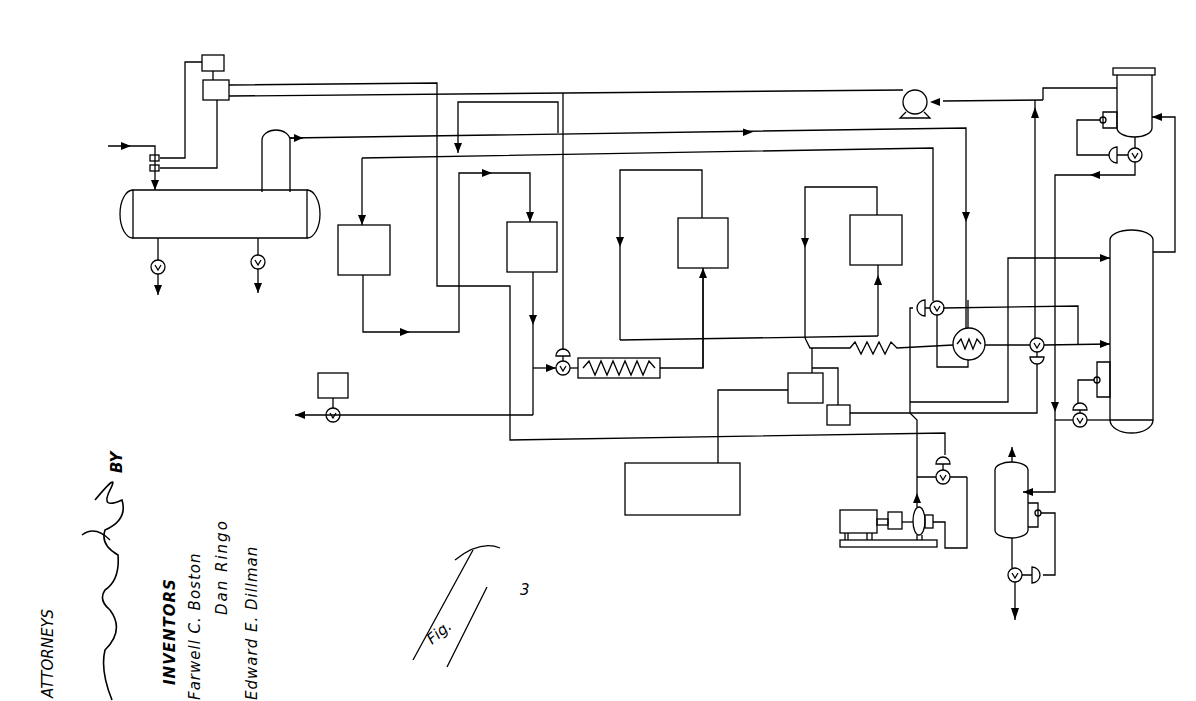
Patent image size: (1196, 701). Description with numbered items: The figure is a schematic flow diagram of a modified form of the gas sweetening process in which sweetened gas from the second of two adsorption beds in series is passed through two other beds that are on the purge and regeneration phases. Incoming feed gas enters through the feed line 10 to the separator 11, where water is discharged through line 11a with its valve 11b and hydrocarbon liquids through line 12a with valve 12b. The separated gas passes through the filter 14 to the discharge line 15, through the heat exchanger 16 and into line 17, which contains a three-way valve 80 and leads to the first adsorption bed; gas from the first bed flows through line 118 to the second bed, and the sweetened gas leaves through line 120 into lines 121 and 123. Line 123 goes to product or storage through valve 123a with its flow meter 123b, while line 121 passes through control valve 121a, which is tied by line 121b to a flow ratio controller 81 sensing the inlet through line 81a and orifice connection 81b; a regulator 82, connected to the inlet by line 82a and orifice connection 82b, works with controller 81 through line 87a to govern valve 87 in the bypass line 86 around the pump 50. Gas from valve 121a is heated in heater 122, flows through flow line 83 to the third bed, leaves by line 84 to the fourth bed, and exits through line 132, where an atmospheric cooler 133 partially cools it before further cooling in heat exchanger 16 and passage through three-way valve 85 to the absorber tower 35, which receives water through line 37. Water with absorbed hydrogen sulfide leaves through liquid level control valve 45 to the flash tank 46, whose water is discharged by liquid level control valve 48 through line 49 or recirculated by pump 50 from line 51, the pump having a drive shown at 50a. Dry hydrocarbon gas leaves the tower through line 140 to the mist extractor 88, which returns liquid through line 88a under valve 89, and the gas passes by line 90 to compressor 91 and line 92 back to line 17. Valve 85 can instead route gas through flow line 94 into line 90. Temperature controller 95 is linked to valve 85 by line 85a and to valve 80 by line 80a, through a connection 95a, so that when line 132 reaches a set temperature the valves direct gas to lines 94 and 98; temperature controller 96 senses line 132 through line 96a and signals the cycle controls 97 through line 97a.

The feed line 10 is at (133, 147).
The separator 11 is at (120, 213).
The water discharge line 11a is at (155, 249).
The valve 11b is at (150, 270).
The hydrocarbon liquid line 12a is at (256, 246).
The valve 12b is at (250, 265).
The filter 14 is at (282, 164).
The discharge line 15 is at (320, 137).
The heat exchanger 16 is at (976, 358).
The line 17 is at (930, 152).
The absorber tower 35 is at (1150, 295).
The line 37 is at (1082, 257).
The liquid level control valve 45 is at (1086, 430).
The flash tank 46 is at (1000, 462).
The liquid level control valve 48 is at (1008, 576).
The line 49 is at (1012, 598).
The pump 50 is at (915, 508).
The pump motor 50a is at (848, 510).
The line 51 is at (940, 550).
The three-way valve 80 is at (937, 300).
The line 80a is at (912, 368).
The flow ratio controller 81 is at (229, 84).
The line 81a is at (219, 114).
The orifice connection 81b is at (150, 168).
The regulator 82 is at (214, 54).
The line 82a is at (185, 100).
The orifice connection 82b is at (158, 156).
The flow line 83 is at (705, 300).
The line 84 is at (621, 200).
The three-way valve 85 is at (1045, 349).
The line 85a is at (990, 413).
The bypass line 86 is at (963, 500).
The valve 87 is at (937, 463).
The line 87a is at (351, 83).
The mist extractor 88 is at (1140, 98).
The line 88a is at (1056, 191).
The valve 89 is at (1140, 160).
The line 90 is at (1070, 88).
The gas circulator or compressor 91 is at (918, 89).
The line 92 is at (668, 92).
The flow line 94 is at (1033, 203).
The temperature controller 95 is at (850, 408).
The controller connection line 95a is at (840, 368).
The temperature controller 96 is at (788, 381).
The line 96a is at (805, 351).
The cycle controls 97 is at (682, 498).
The line 97a is at (722, 400).
The line 98 is at (990, 305).
The line 118 is at (425, 332).
The line 120 is at (532, 298).
The line 121 is at (546, 368).
The control valve 121a is at (560, 378).
The line 121b is at (500, 93).
The heater 122 is at (640, 380).
The line 123 is at (538, 398).
The valve 123a is at (337, 423).
The flow meter 123b is at (348, 385).
The line 132 is at (803, 207).
The atmospheric cooler 133 is at (868, 335).
The line 140 is at (1175, 207).